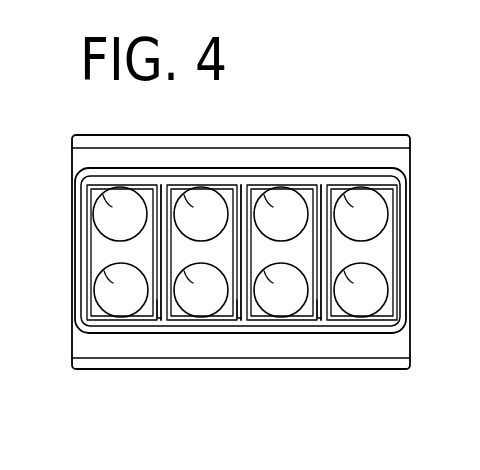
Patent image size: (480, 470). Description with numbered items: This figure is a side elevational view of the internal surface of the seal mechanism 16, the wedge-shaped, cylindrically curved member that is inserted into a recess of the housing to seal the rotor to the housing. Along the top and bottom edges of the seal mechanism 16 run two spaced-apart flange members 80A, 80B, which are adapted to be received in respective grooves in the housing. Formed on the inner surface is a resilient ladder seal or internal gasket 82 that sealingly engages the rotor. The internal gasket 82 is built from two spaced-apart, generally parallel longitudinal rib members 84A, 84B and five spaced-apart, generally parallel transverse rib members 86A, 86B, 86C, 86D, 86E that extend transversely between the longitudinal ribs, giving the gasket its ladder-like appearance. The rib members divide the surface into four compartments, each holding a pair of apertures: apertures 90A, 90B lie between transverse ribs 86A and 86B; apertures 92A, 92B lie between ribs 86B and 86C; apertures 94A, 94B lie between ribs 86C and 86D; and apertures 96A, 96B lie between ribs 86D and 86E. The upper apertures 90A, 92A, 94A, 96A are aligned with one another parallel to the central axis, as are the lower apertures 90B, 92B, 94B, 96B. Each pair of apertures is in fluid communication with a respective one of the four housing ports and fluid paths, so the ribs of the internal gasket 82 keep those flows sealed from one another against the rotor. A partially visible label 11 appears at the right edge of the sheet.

The seal mechanism 16 is at (82, 127).
The flange member 80A is at (243, 142).
The flange member 80B is at (267, 364).
The internal gasket 82 is at (414, 231).
The longitudinal rib member 84A is at (372, 184).
The longitudinal rib member 84B is at (377, 326).
The transverse rib member 86A is at (82, 289).
The transverse rib member 86B is at (158, 303).
The transverse rib member 86C is at (237, 303).
The transverse rib member 86D is at (318, 303).
The transverse rib member 86E is at (402, 260).
The aperture 90A is at (120, 214).
The aperture 90B is at (121, 290).
The aperture 92A is at (201, 214).
The aperture 92B is at (201, 290).
The aperture 94A is at (281, 214).
The aperture 94B is at (281, 290).
The aperture 96A is at (361, 214).
The aperture 96B is at (361, 290).
The partial numeral 11 is at (472, 340).